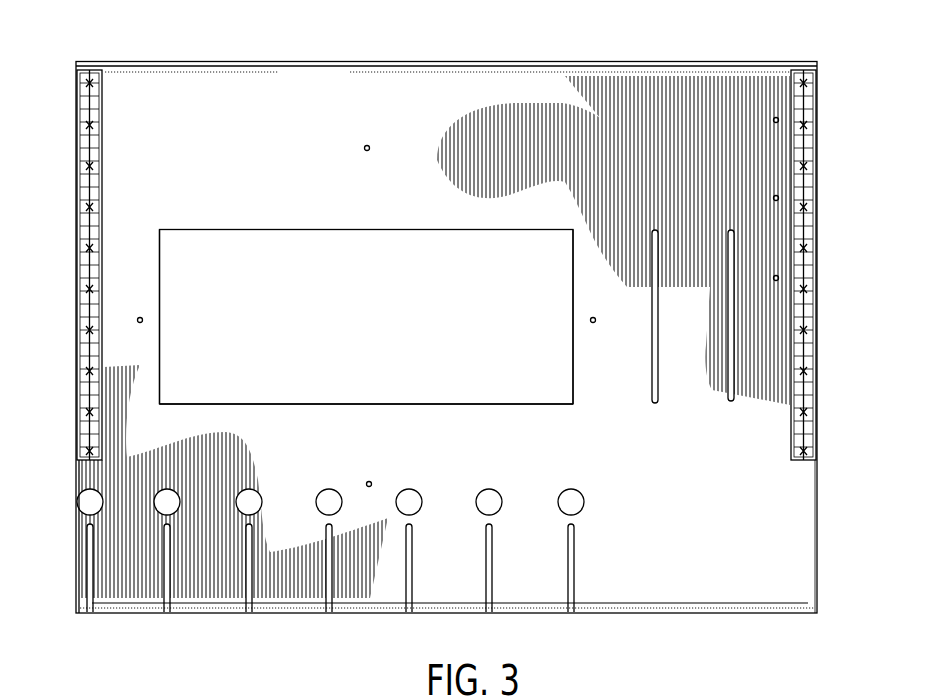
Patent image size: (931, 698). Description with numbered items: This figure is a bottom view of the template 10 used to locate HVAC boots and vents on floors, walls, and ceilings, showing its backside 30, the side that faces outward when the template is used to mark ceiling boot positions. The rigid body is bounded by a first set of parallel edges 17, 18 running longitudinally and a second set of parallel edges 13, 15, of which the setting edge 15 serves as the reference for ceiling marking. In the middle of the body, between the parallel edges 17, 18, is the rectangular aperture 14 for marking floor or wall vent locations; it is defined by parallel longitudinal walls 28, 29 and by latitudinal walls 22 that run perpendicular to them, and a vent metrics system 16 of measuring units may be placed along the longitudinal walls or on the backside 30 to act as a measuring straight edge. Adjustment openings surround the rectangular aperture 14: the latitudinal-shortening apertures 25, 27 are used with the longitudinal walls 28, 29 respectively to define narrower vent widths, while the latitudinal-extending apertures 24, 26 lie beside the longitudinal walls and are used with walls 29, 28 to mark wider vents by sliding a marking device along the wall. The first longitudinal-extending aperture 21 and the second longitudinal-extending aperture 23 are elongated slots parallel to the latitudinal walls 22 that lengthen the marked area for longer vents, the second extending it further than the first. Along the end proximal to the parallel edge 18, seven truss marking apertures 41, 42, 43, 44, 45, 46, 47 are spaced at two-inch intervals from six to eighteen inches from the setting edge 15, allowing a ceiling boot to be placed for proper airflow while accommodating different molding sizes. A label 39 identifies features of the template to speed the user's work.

The template 10 is at (724, 38).
The parallel edge 13 is at (76, 467).
The rectangular aperture 14 is at (172, 359).
The setting edge 15 is at (818, 551).
The vent metrics system 16 is at (77, 296).
The parallel edge 17 is at (690, 61).
The parallel edge 18 is at (672, 614).
The first longitudinal-extending aperture 21 is at (659, 385).
The latitudinal wall 22 is at (160, 262).
The second longitudinal-extending aperture 23 is at (735, 385).
The latitudinal-extending aperture 24 is at (367, 145).
The latitudinal-shortening aperture 25 is at (590, 320).
The latitudinal-extending aperture 26 is at (369, 481).
The latitudinal-shortening aperture 27 is at (143, 320).
The longitudinal wall 28 is at (375, 231).
The longitudinal wall 29 is at (351, 403).
The backside 30 is at (227, 97).
The label 39 is at (572, 488).
The truss marking aperture 41 is at (568, 583).
The truss marking aperture 42 is at (486, 583).
The truss marking aperture 43 is at (406, 583).
The truss marking aperture 44 is at (326, 583).
The truss marking aperture 45 is at (246, 583).
The truss marking aperture 46 is at (164, 583).
The truss marking aperture 47 is at (79, 576).